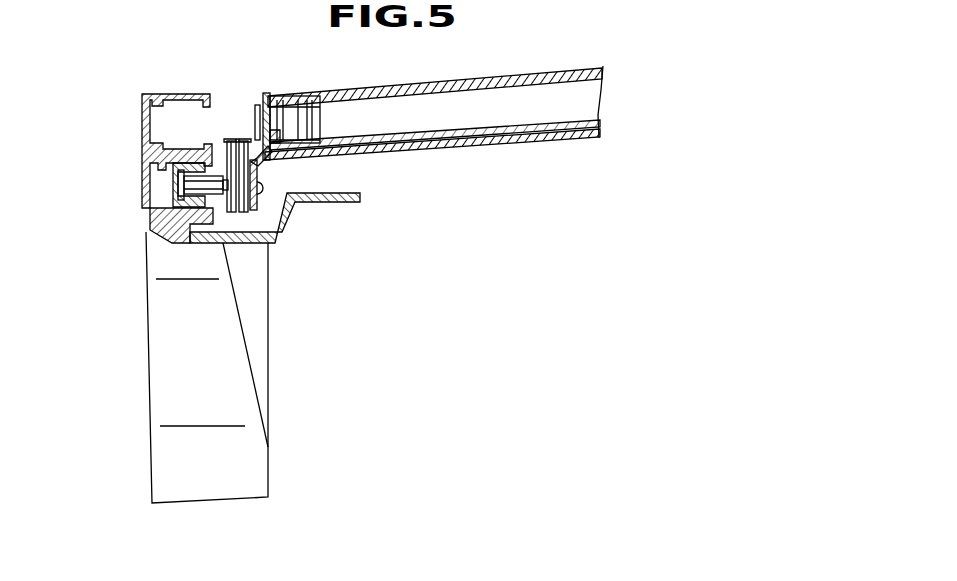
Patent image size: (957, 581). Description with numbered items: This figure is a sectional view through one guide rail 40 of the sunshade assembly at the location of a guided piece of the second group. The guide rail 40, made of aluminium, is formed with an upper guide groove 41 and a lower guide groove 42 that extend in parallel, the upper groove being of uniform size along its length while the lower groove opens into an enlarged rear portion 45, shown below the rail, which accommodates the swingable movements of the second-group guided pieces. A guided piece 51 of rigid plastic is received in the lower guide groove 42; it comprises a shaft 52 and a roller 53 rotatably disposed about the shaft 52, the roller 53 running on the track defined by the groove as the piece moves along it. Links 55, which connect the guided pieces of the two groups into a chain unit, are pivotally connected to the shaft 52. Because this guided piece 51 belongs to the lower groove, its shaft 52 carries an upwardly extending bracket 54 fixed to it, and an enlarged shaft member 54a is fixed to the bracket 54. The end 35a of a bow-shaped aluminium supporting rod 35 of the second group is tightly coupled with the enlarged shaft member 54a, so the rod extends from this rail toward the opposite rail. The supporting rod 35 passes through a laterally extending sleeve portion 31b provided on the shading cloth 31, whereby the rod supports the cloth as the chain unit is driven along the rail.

The guide rail 40 is at (150, 162).
The upper guide groove 41 is at (152, 94).
The lower guide groove 42 is at (148, 212).
The enlarged rear portion 45 is at (213, 365).
The guided piece 51 is at (168, 190).
The shaft 52 is at (195, 185).
The roller 53 is at (165, 218).
The bracket 54 is at (262, 165).
The enlarged shaft member 54a is at (303, 117).
The link 55 is at (245, 140).
The shading cloth 31 is at (472, 152).
The sleeve portion 31b is at (486, 82).
The supporting rod 35 is at (432, 148).
The end of supporting rod 35a is at (272, 96).